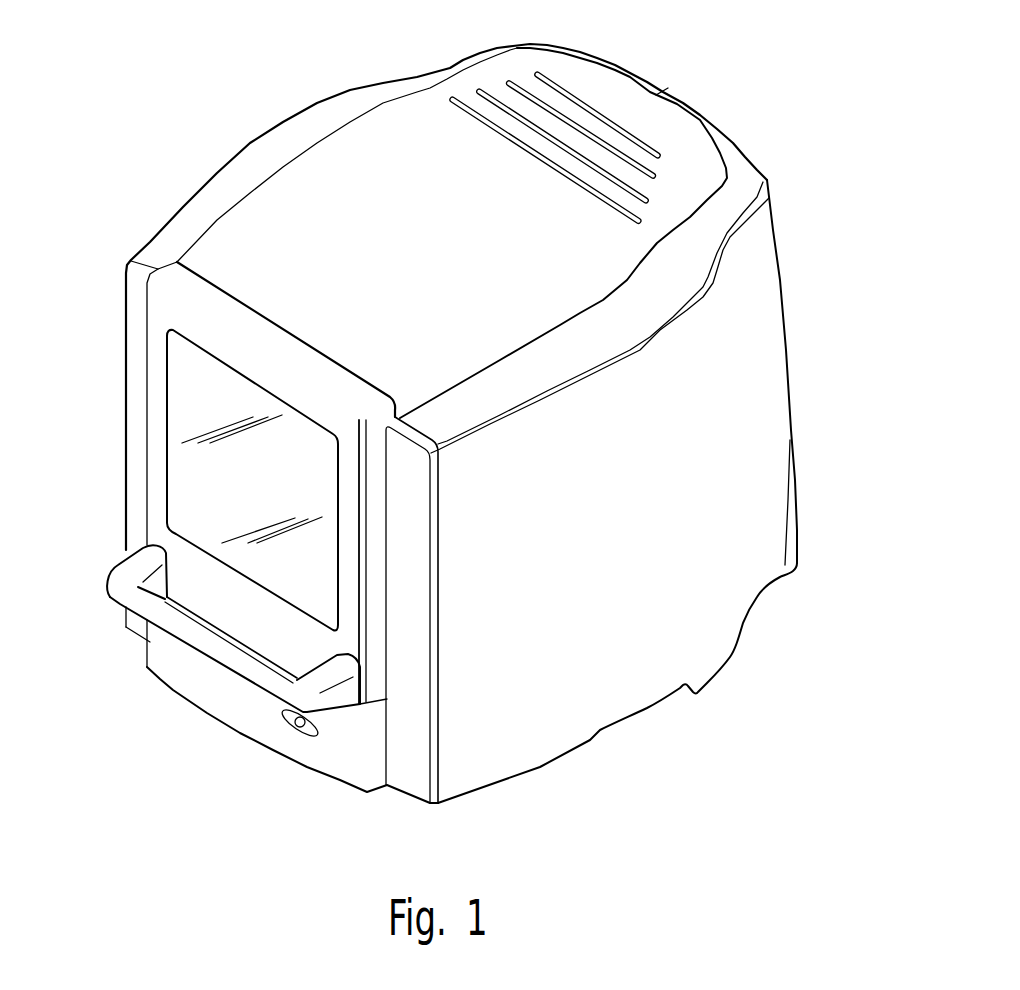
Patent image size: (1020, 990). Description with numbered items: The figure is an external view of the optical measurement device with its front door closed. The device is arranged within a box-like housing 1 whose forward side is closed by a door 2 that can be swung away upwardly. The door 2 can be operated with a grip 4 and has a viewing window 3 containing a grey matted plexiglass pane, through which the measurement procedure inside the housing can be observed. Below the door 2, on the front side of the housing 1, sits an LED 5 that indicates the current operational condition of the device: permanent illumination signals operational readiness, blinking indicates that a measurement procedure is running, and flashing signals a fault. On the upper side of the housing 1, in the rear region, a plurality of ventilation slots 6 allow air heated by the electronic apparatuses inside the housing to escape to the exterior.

The housing 1 is at (846, 425).
The door 2 is at (155, 448).
The viewing window 3 is at (177, 405).
The grip 4 is at (115, 582).
The LED 5 is at (287, 726).
The ventilation slots 6 is at (583, 102).